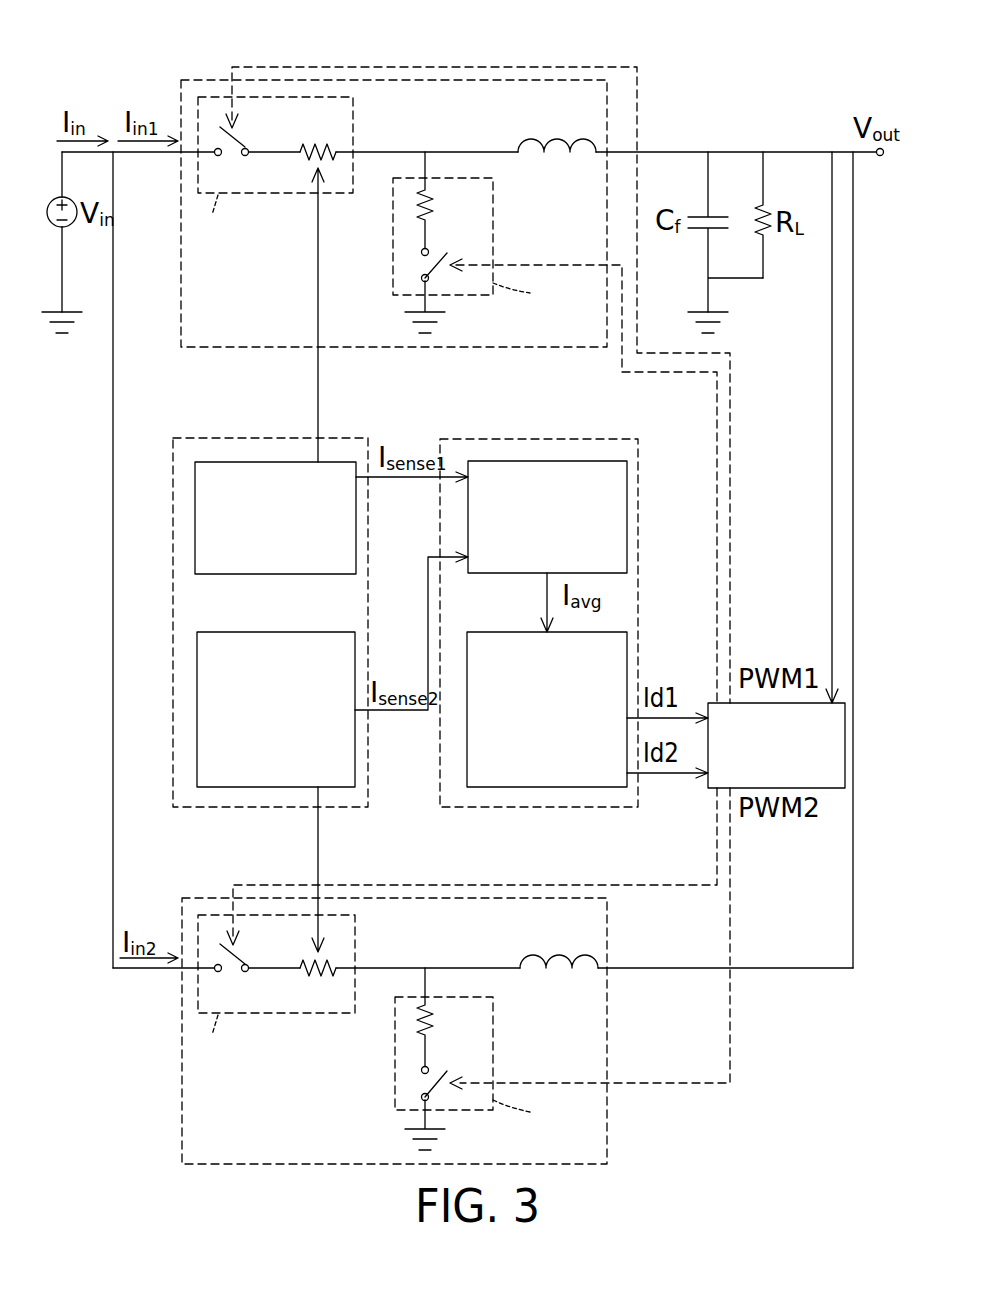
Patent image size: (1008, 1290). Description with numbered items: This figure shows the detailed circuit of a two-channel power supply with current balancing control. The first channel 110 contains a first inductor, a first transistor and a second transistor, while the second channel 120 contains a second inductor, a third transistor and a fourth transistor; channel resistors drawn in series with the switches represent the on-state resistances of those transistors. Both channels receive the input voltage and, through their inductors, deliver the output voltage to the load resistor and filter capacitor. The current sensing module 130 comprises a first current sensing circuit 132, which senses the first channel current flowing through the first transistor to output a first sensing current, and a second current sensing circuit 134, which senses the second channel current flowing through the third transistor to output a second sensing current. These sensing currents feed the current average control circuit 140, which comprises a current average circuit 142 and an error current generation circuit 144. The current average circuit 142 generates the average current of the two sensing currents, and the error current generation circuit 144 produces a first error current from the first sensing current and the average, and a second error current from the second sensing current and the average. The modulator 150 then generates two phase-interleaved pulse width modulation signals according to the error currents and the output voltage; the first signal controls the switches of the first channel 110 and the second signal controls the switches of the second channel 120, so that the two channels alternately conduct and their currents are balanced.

The first channel 110 is at (213, 77).
The second channel 120 is at (195, 898).
The current sensing module 130 is at (190, 437).
The first current sensing circuit 132 is at (265, 460).
The second current sensing circuit 134 is at (247, 788).
The current average control circuit 140 is at (627, 438).
The current average circuit 142 is at (537, 460).
The error current generation circuit 144 is at (518, 788).
The modulator 150 is at (828, 790).